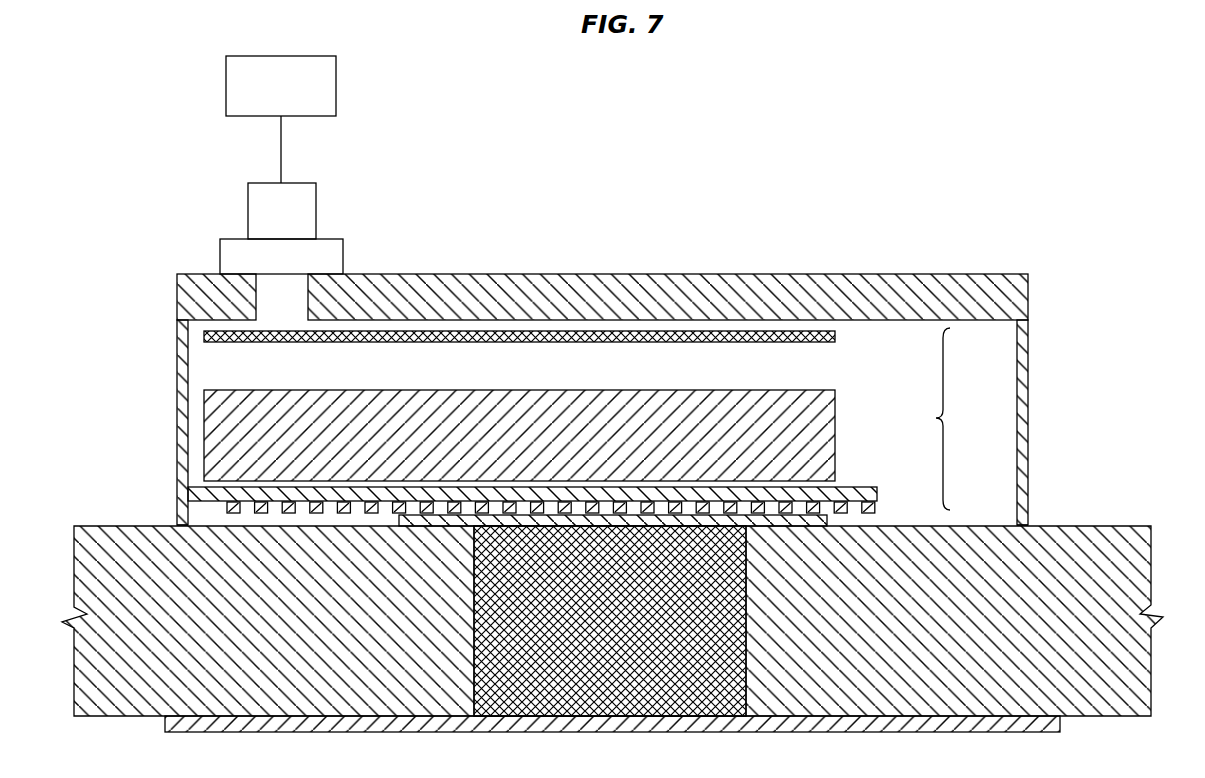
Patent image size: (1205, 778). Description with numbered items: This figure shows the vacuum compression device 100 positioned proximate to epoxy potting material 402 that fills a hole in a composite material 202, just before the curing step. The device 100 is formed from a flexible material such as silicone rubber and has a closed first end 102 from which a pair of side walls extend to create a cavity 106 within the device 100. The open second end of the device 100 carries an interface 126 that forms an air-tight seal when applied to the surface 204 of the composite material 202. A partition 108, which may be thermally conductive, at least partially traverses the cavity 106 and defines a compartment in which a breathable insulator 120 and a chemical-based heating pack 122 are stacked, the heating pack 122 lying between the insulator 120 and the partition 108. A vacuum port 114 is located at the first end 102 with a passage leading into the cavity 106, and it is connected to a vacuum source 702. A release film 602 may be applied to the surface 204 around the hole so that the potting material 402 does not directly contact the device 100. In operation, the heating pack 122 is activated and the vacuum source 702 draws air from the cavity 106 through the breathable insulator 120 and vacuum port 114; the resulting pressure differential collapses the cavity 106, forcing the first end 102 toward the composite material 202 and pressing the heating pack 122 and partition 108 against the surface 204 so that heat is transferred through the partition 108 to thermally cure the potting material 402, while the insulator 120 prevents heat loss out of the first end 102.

The vacuum compression device 100 is at (774, 125).
The first end 102 is at (643, 274).
The cavity 106 is at (590, 420).
The partition 108 is at (857, 488).
The vacuum port 114 is at (316, 197).
The breathable insulator 120 is at (802, 343).
The heating pack 122 is at (716, 390).
The interface 126 is at (181, 521).
The composite material 202 is at (1099, 694).
The surface 204 is at (1125, 523).
The epoxy potting material 402 is at (722, 698).
The release film 602 is at (827, 521).
The vacuum source 702 is at (226, 84).